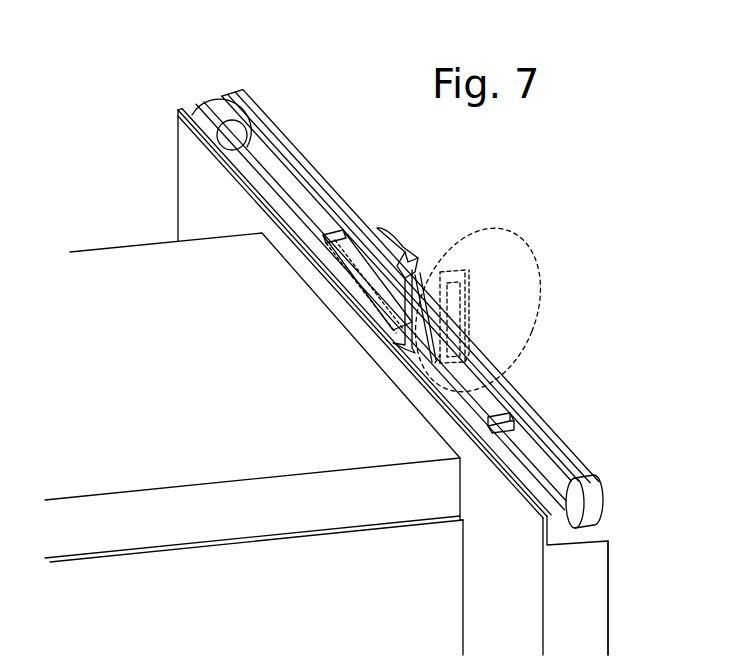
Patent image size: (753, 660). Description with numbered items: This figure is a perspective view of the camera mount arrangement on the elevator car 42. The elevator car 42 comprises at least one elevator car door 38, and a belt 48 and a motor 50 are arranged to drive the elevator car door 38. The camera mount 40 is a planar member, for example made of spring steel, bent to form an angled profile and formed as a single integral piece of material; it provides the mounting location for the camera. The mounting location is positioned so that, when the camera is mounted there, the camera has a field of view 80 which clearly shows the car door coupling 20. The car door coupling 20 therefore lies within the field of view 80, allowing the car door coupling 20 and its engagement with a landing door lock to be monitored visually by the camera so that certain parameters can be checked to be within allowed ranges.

The elevator car 42 is at (107, 211).
The belt 48 is at (294, 148).
The motor 50 is at (208, 107).
The camera mount 40 is at (395, 233).
The field of view 80 is at (538, 232).
The car door coupling 20 is at (480, 293).
The elevator car door 38 is at (597, 581).